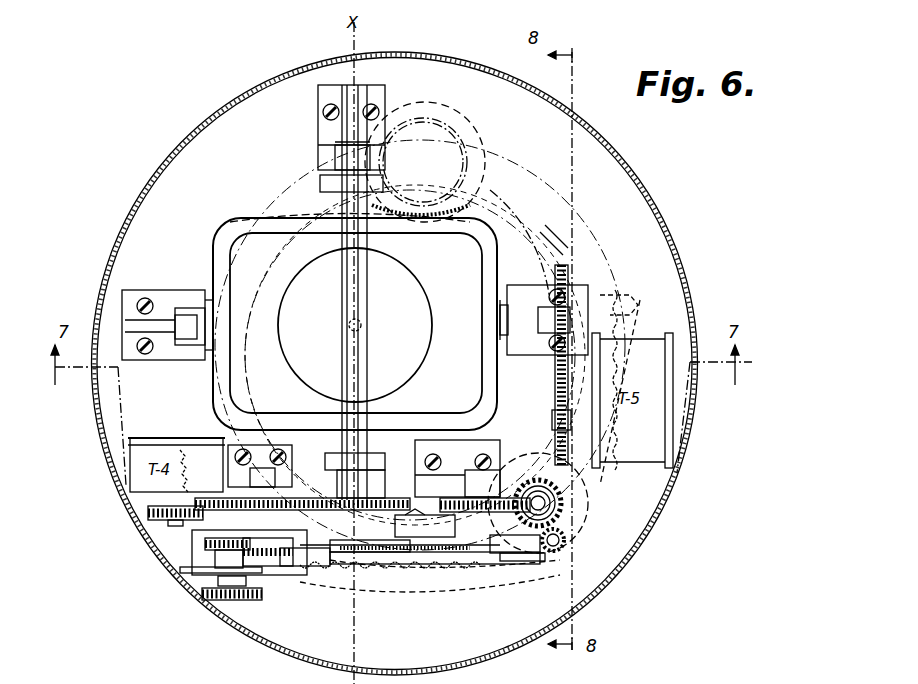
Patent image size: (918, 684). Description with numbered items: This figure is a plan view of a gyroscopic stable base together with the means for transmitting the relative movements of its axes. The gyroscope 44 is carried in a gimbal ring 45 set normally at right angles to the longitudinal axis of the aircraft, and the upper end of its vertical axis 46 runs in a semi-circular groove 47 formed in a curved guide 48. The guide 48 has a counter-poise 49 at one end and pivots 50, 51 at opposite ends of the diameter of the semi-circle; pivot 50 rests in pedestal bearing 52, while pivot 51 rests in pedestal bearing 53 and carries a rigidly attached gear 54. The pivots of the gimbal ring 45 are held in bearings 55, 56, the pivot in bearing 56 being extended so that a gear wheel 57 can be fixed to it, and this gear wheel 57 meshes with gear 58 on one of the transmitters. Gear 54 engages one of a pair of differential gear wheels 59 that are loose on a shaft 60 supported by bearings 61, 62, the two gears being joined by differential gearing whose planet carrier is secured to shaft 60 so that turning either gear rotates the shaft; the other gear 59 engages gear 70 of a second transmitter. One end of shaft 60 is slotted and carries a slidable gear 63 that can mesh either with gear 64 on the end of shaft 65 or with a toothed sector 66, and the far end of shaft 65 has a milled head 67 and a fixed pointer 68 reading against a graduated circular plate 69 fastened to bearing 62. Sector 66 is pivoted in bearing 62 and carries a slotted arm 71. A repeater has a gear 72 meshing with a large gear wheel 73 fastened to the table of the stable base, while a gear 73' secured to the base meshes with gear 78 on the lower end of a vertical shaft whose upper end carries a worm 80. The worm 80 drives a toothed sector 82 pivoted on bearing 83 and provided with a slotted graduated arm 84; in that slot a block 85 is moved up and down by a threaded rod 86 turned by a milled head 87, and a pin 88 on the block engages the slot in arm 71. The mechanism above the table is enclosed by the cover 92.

The gyroscope 44 is at (425, 308).
The gimbal ring 45 is at (470, 222).
The vertical axis 46 is at (360, 322).
The semi-circular groove 47 is at (347, 360).
The curved guide 48 is at (368, 410).
The counter-poise 49 is at (322, 183).
The pivot 50 is at (338, 142).
The pivot 51 is at (378, 470).
The pedestal bearing 52 is at (372, 100).
The pedestal bearing 53 is at (385, 552).
The gear 54 is at (455, 505).
The bearing 55 is at (155, 302).
The bearing 56 is at (578, 300).
The gear wheel 57 is at (563, 268).
The gear 58 is at (566, 440).
The differential gear wheels 59 is at (200, 515).
The shaft 60 is at (300, 566).
The bearing 61 is at (290, 470).
The bearing 62 is at (360, 565).
The slidable gear 63 is at (295, 560).
The gear 64 is at (224, 552).
The shaft 65 is at (225, 560).
The toothed sector 66 is at (345, 566).
The milled head 67 is at (235, 595).
The pointer 68 is at (258, 598).
The graduated circular plate 69 is at (210, 548).
The gear 70 is at (150, 512).
The slotted arm 71 is at (462, 568).
The gear 72 is at (448, 150).
The large gear wheel 73 is at (520, 245).
The gear 73' is at (440, 425).
The gear 78 is at (585, 488).
The worm 80 is at (550, 508).
The toothed sector 82 is at (516, 553).
The bearing 83 is at (483, 450).
The slotted graduated arm 84 is at (486, 548).
The block 85 is at (425, 523).
The threaded rod 86 is at (528, 562).
The milled head 87 is at (553, 552).
The pin 88 is at (412, 552).
The cover 92 is at (676, 228).